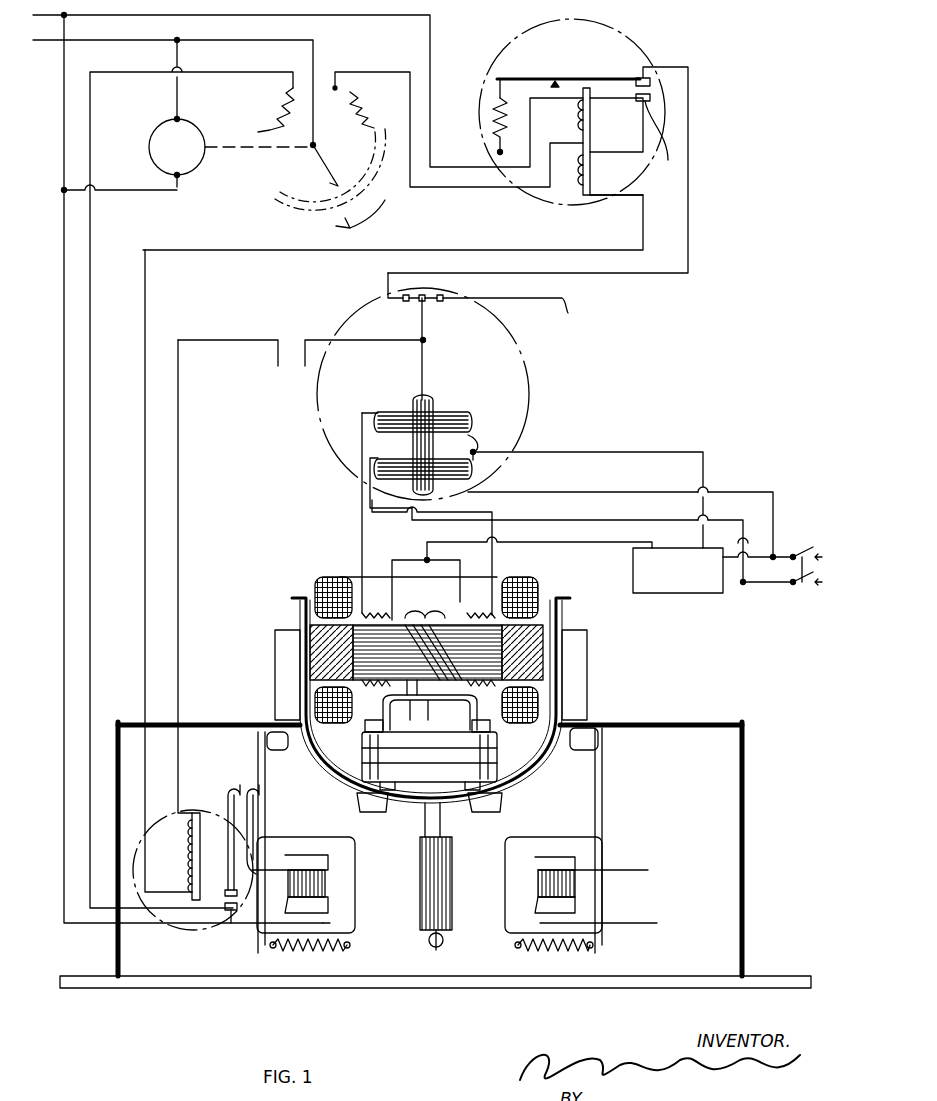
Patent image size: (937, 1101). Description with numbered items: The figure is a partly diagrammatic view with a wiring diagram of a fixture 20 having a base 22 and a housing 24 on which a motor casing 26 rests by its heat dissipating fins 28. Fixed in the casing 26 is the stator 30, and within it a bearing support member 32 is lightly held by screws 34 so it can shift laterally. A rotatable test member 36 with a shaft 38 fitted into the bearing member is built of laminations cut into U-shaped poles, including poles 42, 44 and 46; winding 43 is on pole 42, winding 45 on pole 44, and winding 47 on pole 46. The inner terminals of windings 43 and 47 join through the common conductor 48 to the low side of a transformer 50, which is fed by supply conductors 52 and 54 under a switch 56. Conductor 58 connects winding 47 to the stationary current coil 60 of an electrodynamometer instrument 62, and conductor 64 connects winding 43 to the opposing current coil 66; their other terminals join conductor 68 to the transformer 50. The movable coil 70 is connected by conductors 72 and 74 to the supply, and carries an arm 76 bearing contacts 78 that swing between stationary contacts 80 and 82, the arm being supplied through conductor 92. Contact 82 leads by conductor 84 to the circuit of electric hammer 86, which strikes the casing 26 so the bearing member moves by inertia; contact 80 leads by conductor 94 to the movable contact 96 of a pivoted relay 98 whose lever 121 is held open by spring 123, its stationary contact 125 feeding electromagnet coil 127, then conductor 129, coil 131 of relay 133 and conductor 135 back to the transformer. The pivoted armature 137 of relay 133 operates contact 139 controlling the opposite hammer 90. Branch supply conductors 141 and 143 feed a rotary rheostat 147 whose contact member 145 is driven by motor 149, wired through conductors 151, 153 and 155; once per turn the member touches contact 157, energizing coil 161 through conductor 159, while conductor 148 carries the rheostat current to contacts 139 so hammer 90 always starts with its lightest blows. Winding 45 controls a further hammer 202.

The fixture 20 is at (748, 792).
The base 22 is at (156, 990).
The housing 24 is at (650, 716).
The casing 26 is at (298, 604).
The heat dissipating fins 28 is at (276, 658).
The stator 30 is at (310, 632).
The bearing support member 32 is at (368, 760).
The screws 34 is at (366, 724).
The rotatable test member 36 is at (418, 598).
The shaft 38 is at (408, 690).
The pole 42 is at (500, 598).
The winding 43 is at (480, 612).
The pole 44 is at (434, 624).
The winding 45 is at (430, 712).
The pole 46 is at (344, 576).
The winding 47 is at (374, 582).
The common conductor 48 is at (570, 546).
The transformer 50 is at (650, 598).
The supply conductor 52 is at (788, 546).
The supply conductor 54 is at (780, 588).
The switch 56 is at (806, 590).
The conductor 58 is at (360, 514).
The stationary current coil 60 is at (446, 408).
The electrodynamometer instrument 62 is at (530, 376).
The conductor 64 is at (368, 490).
The stationary current coil 66 is at (460, 480).
The conductor 68 is at (610, 452).
The movable coil 70 is at (414, 402).
The conductor 72 is at (746, 488).
The conductor 74 is at (600, 520).
The arm 76 is at (426, 350).
The electrical contacts 78 is at (440, 292).
The stationary contact 80 is at (385, 291).
The stationary contact 82 is at (450, 304).
The conductor 84 is at (566, 304).
The electric hammer 86 is at (550, 844).
The electric hammer 90 is at (310, 844).
The conductor 92 is at (305, 338).
The conductor 94 is at (664, 280).
The movable contact 96 is at (636, 80).
The pivoted relay 98 is at (514, 56).
The pivoted lever member 121 is at (568, 72).
The spring 123 is at (494, 116).
The stationary contact 125 is at (676, 182).
The electromagnet coil 127 is at (572, 178).
The conductor 129 is at (218, 254).
The electromagnet coil 131 is at (222, 814).
The relay 133 is at (178, 814).
The conductor 135 is at (180, 458).
The pivoted armature 137 is at (190, 908).
The contact 139 is at (236, 908).
The branch supply conductor 141 is at (72, 12).
The branch supply conductor 143 is at (85, 38).
The movable contact member 145 is at (338, 184).
The rotary rheostat 147 is at (280, 100).
The conductor 148 is at (124, 480).
The electric motor 149 is at (190, 165).
The conductor 151 is at (176, 91).
The conductor 153 is at (130, 198).
The conductor 155 is at (63, 118).
The contact 157 is at (334, 84).
The conductor 159 is at (444, 190).
The electromagnet coil 161 is at (620, 116).
The electric hammer 202 is at (478, 840).